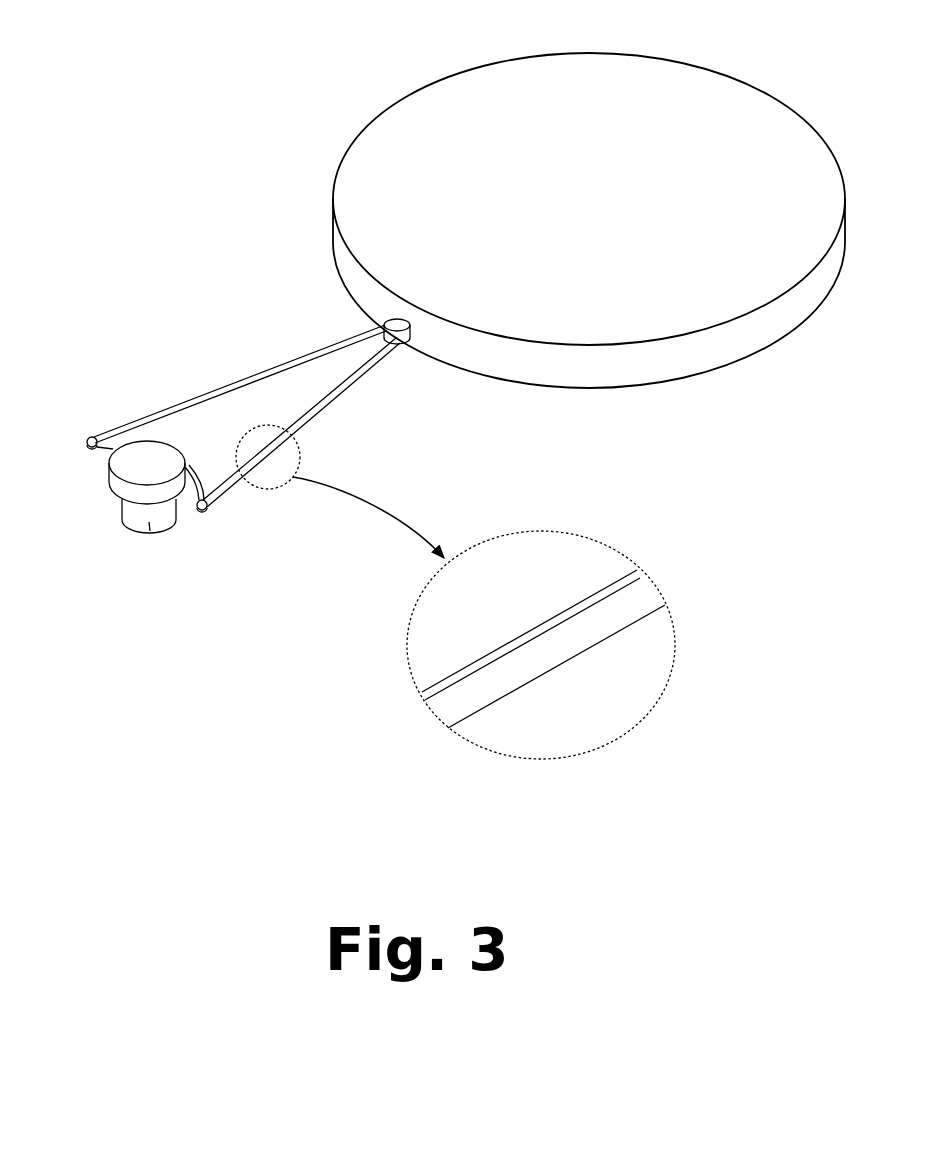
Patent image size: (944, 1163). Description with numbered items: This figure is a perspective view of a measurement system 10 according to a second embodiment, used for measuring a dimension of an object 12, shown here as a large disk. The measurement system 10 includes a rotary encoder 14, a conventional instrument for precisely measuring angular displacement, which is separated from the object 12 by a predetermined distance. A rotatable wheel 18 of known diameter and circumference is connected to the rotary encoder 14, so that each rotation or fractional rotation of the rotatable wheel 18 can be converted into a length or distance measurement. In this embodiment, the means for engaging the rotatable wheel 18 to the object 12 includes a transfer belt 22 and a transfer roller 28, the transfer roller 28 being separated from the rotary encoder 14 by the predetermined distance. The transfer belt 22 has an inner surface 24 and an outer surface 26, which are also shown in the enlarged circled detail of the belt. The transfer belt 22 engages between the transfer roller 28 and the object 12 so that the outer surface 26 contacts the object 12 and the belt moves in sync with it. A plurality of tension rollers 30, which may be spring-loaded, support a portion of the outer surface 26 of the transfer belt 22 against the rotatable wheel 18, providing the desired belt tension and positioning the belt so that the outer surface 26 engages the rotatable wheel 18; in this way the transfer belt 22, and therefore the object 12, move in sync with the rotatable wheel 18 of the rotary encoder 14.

The measurement system 10 is at (176, 327).
The object 12 is at (589, 220).
The rotary encoder 14 is at (148, 522).
The rotatable wheel 18 is at (147, 472).
The transfer belt 22 is at (303, 353).
The inner surface 24 is at (238, 384).
The outer surface 26 is at (337, 398).
The transfer roller 28 is at (397, 345).
The tension rollers 30 is at (90, 437).